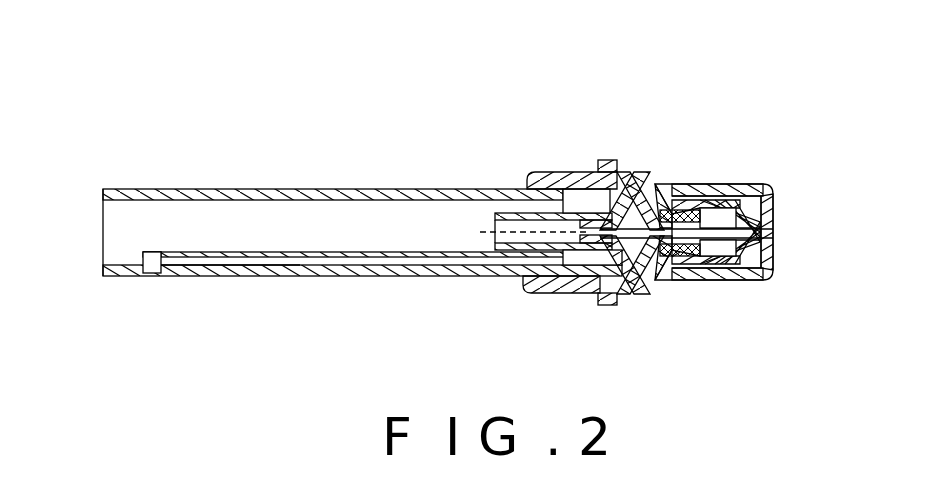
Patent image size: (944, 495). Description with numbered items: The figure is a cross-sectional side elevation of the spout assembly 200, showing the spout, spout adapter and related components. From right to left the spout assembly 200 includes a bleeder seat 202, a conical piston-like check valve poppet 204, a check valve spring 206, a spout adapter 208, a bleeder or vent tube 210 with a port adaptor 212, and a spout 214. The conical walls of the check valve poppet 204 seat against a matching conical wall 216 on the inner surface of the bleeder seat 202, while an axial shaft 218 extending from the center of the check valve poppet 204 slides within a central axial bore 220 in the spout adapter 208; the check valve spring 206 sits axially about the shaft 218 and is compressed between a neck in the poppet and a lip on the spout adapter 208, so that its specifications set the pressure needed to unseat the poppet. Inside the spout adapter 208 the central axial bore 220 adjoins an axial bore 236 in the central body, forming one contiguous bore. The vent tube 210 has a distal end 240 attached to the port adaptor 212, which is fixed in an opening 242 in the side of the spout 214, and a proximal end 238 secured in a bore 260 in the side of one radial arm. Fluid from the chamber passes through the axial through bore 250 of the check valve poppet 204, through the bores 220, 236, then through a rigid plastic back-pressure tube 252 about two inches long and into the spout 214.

The spout assembly 200 is at (352, 84).
The bleeder seat 202 is at (745, 188).
The check valve poppet 204 is at (778, 195).
The check valve spring 206 is at (700, 198).
The spout adapter 208 is at (573, 140).
The vent tube 210 is at (300, 258).
The port adaptor 212 is at (160, 252).
The spout 214 is at (378, 192).
The conical wall 216 is at (735, 282).
The shaft 218 is at (730, 188).
The central axial bore 220 is at (660, 210).
The axial bore 236 is at (493, 232).
The proximal end 238 is at (512, 278).
The distal end 240 is at (228, 268).
The opening 242 is at (147, 276).
The axial through bore 250 is at (773, 240).
The back-pressure tube 252 is at (572, 212).
The bore 260 is at (600, 275).